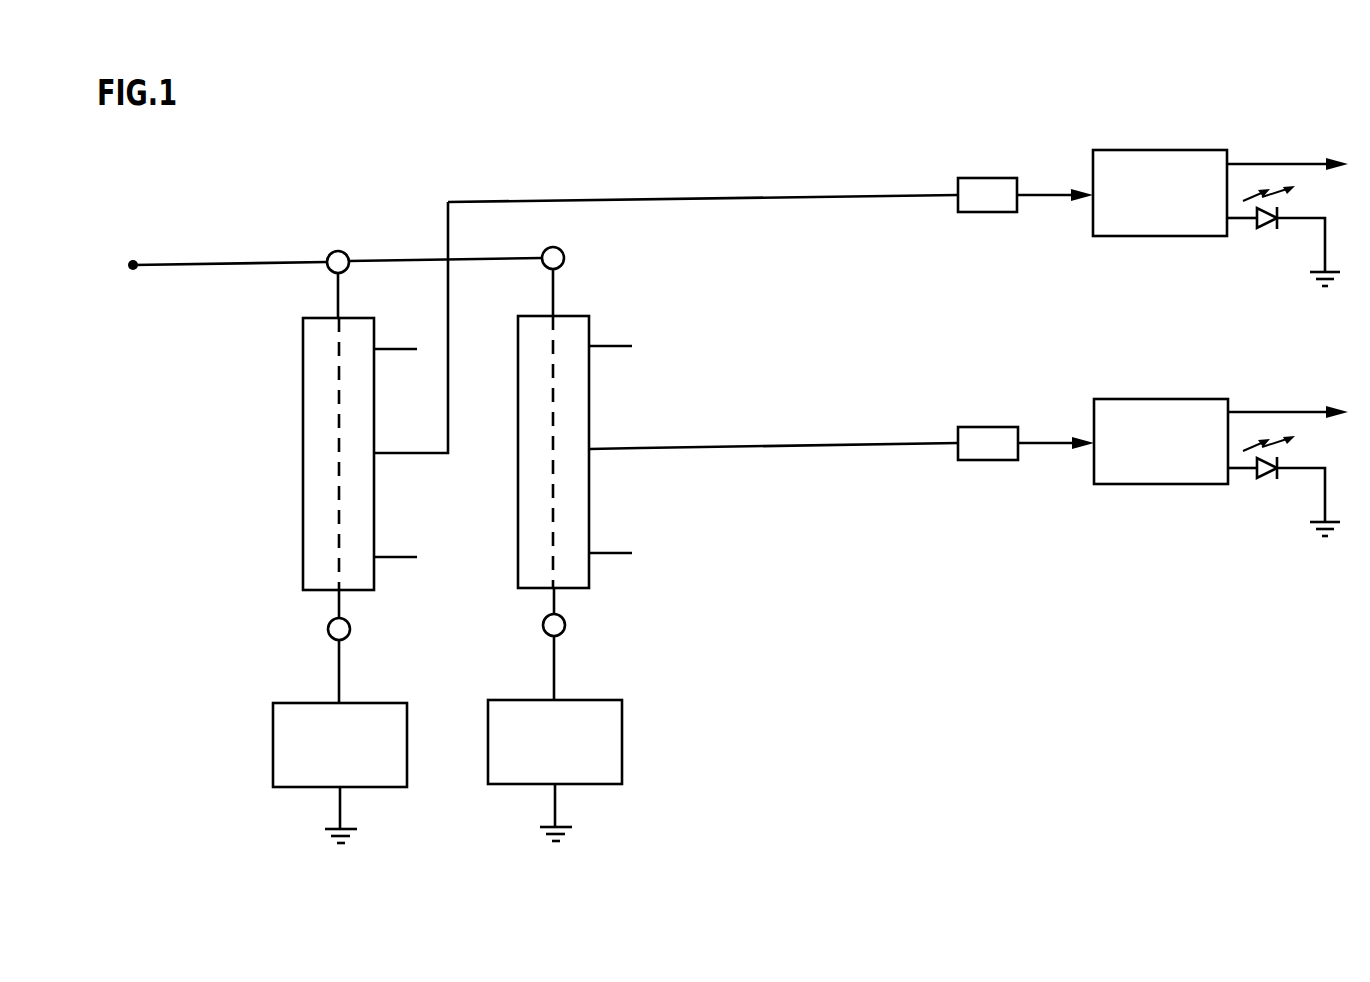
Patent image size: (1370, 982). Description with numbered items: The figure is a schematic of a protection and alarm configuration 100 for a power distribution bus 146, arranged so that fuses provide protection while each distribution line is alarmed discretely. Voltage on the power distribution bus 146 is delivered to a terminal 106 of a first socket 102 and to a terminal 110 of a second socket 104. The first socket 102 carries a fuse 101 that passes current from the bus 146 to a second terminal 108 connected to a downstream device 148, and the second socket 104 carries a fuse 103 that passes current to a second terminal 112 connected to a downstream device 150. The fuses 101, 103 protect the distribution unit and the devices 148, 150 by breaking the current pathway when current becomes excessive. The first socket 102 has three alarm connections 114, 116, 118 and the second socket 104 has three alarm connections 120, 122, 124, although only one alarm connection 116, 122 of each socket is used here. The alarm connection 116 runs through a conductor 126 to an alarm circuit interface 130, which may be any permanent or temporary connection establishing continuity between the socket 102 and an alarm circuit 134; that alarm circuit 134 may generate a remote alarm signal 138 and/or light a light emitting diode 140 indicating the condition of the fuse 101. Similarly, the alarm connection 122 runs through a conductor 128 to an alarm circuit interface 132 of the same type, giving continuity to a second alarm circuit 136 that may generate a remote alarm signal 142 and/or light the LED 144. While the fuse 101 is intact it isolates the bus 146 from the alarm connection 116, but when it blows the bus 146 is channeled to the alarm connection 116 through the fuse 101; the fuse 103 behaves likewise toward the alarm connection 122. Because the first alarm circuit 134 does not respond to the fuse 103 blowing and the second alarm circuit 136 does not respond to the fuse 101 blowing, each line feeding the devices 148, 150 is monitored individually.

The protection and alarm configuration 100 is at (868, 536).
The fuse 101 is at (338, 493).
The first socket 102 is at (302, 406).
The fuse 103 is at (553, 488).
The second socket 104 is at (515, 460).
The terminal 106 is at (344, 252).
The second terminal 108 is at (348, 632).
The terminal 110 is at (565, 255).
The second terminal 112 is at (563, 628).
The alarm connection 114 is at (387, 347).
The alarm connection 116 is at (397, 452).
The alarm connection 118 is at (397, 555).
The alarm connection 120 is at (602, 342).
The alarm connection 122 is at (612, 447).
The alarm connection 124 is at (610, 552).
The conductor 126 is at (732, 197).
The conductor 128 is at (732, 447).
The alarm circuit interface 130 is at (987, 178).
The alarm circuit interface 132 is at (987, 427).
The alarm circuit 134 is at (1178, 148).
The second alarm circuit 136 is at (1178, 397).
The remote alarm signal 138 is at (1270, 162).
The light emitting diode 140 is at (1268, 237).
The remote alarm signal 142 is at (1270, 410).
The LED 144 is at (1268, 487).
The power distribution bus 146 is at (165, 262).
The downstream device 148 is at (408, 732).
The downstream device 150 is at (623, 728).